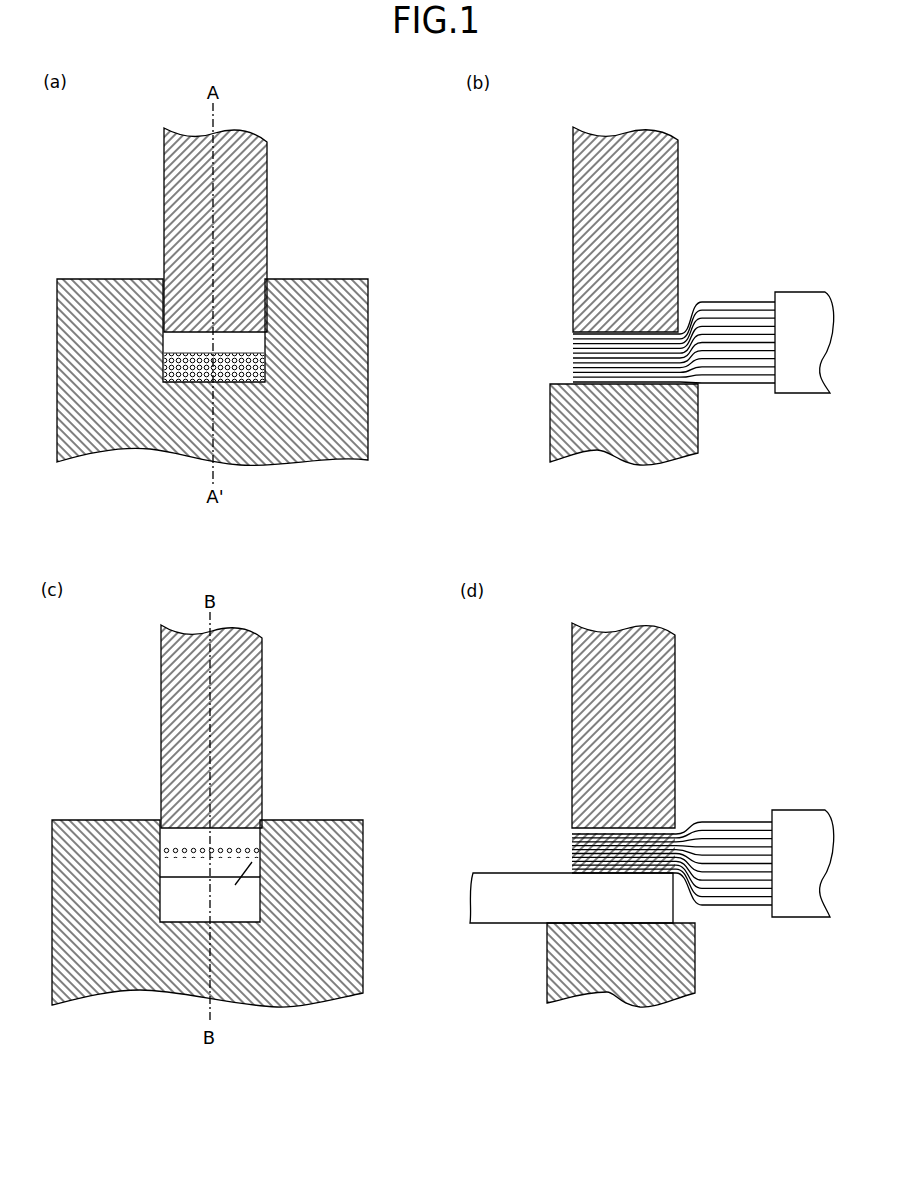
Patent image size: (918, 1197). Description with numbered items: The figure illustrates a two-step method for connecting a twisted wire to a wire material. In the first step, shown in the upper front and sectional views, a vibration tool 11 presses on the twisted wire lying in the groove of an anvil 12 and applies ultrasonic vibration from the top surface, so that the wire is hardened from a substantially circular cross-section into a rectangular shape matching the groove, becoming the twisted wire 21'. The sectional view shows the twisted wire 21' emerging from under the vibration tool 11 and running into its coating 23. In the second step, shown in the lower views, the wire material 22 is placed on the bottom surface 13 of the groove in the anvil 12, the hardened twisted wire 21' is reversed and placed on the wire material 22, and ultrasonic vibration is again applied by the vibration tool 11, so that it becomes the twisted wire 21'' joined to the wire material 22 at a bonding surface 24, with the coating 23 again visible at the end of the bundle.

The vibration tool 11 is at (267, 168).
The anvil 12 is at (112, 279).
The bottom surface of groove in anvil 13 is at (187, 383).
The twisted wire 21' is at (526, 513).
The twisted wire 21'' is at (672, 813).
The wire material 22 is at (332, 820).
The coating 23 is at (790, 300).
The bonding surface 24 is at (568, 857).